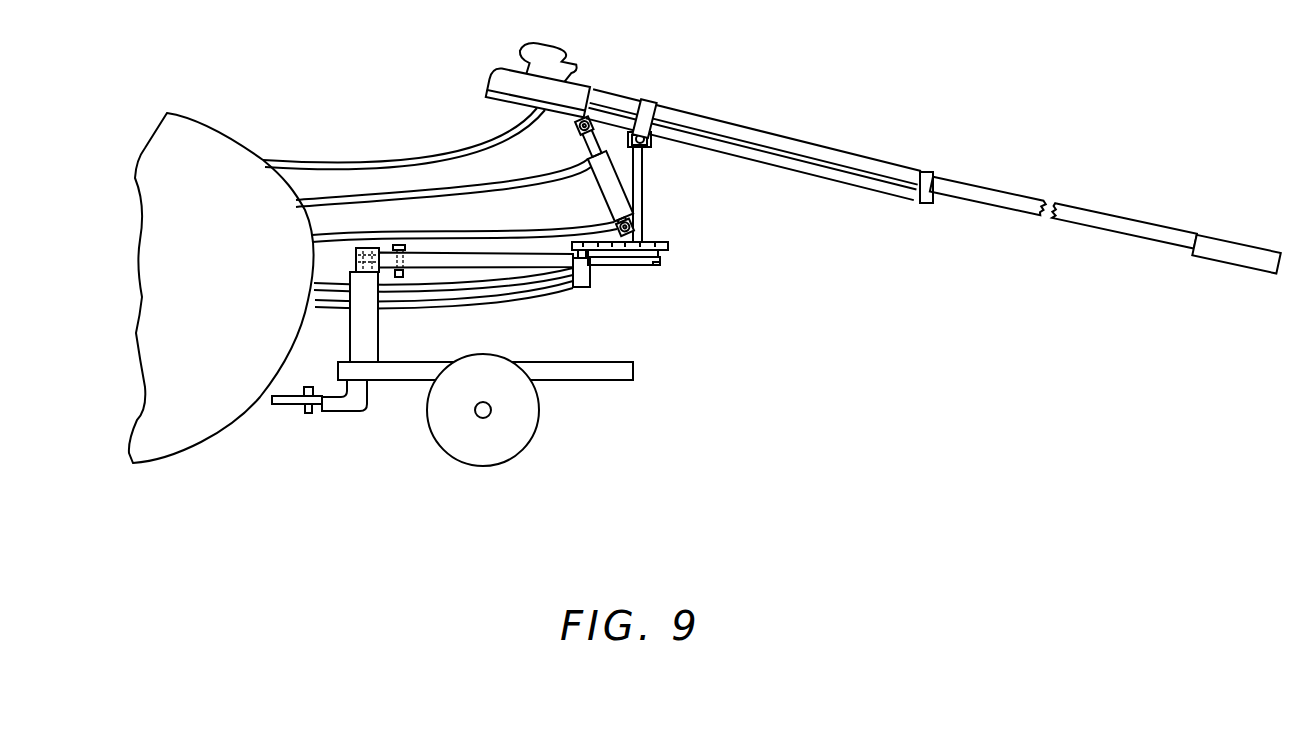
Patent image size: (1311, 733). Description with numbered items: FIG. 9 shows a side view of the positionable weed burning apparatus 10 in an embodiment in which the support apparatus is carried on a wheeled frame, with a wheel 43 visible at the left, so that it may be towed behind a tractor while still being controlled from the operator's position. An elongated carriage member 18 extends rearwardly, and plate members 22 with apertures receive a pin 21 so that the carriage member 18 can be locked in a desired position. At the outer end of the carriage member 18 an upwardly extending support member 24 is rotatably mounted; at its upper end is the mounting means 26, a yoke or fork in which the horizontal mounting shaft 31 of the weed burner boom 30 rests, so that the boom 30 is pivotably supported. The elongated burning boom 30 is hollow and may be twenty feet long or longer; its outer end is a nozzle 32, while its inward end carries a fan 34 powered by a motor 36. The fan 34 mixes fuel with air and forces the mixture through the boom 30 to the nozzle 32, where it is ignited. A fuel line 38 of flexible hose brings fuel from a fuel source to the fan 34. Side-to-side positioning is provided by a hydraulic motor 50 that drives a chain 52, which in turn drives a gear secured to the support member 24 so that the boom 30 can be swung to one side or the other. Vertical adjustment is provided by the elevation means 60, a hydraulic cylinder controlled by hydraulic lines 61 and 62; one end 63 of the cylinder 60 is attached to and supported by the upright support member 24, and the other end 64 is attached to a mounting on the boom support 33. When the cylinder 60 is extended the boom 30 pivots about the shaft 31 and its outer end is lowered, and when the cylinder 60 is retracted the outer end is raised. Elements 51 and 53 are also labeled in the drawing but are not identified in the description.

The positionable weed burning apparatus 10 is at (684, 302).
The carriage member 18 is at (660, 264).
The pin 21 is at (393, 246).
The plate members 22 is at (403, 247).
The support member 24 is at (646, 190).
The mounting means 26 is at (656, 148).
The weed burner boom 30 is at (860, 152).
The horizontal mounting shaft 31 is at (648, 130).
The nozzle 32 is at (1221, 243).
The boom support 33 is at (857, 188).
The fan 34 is at (587, 86).
The motor 36 is at (572, 57).
The fuel line 38 is at (343, 160).
The wheel 43 is at (206, 124).
The hydraulic motor 50 is at (588, 288).
The lower spring arm 51 is at (493, 302).
The chain 52 is at (604, 252).
The lower spring arm 53 is at (530, 285).
The elevation means 60 is at (594, 192).
The hydraulic line 61 is at (533, 232).
The hydraulic line 62 is at (523, 178).
The end of cylinder 63 is at (634, 228).
The end of cylinder 64 is at (580, 128).